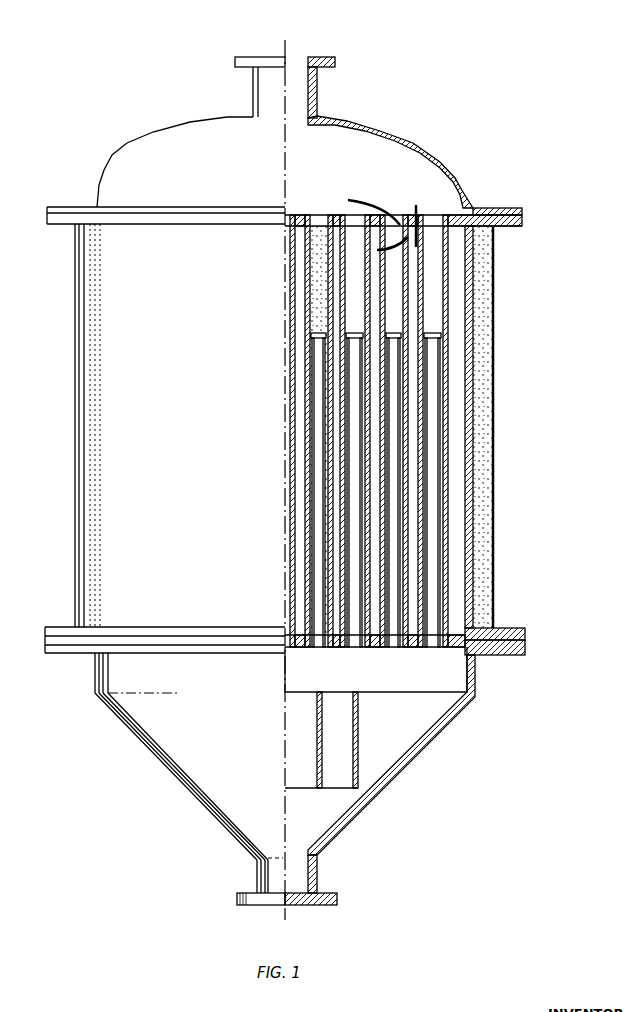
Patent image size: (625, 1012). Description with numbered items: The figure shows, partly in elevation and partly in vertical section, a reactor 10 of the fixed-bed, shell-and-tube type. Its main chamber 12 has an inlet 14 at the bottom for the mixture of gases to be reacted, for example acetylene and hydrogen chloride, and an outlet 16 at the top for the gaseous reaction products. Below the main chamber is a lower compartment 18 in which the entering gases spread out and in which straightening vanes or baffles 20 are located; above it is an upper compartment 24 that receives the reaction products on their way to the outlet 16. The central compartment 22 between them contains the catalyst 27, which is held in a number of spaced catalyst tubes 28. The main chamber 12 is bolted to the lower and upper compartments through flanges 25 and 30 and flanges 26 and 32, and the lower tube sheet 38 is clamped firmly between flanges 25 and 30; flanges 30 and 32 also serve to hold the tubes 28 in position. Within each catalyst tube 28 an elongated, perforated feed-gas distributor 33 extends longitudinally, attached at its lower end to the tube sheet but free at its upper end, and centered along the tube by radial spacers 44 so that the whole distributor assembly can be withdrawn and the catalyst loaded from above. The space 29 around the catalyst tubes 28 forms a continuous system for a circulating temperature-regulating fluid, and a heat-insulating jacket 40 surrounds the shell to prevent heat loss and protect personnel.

The reactor 10 is at (151, 141).
The main chamber 12 is at (480, 503).
The inlet 14 is at (292, 880).
The outlet 16 is at (289, 72).
The lower compartment 18 is at (395, 732).
The straightening vanes 20 is at (360, 745).
The central compartment 22 is at (465, 408).
The upper compartment 24 is at (318, 148).
The flange 25 is at (500, 656).
The flange 26 is at (502, 207).
The catalyst 27 is at (318, 270).
The catalyst tubes 28 is at (357, 228).
The space around the catalyst tubes 29 is at (417, 206).
The flange 30 is at (497, 628).
The flange 32 is at (505, 228).
The feed-gas distributor 33 is at (437, 365).
The lower tube sheet 38 is at (525, 640).
The heat-insulating jacket 40 is at (485, 455).
The radial spacers 44 is at (320, 340).